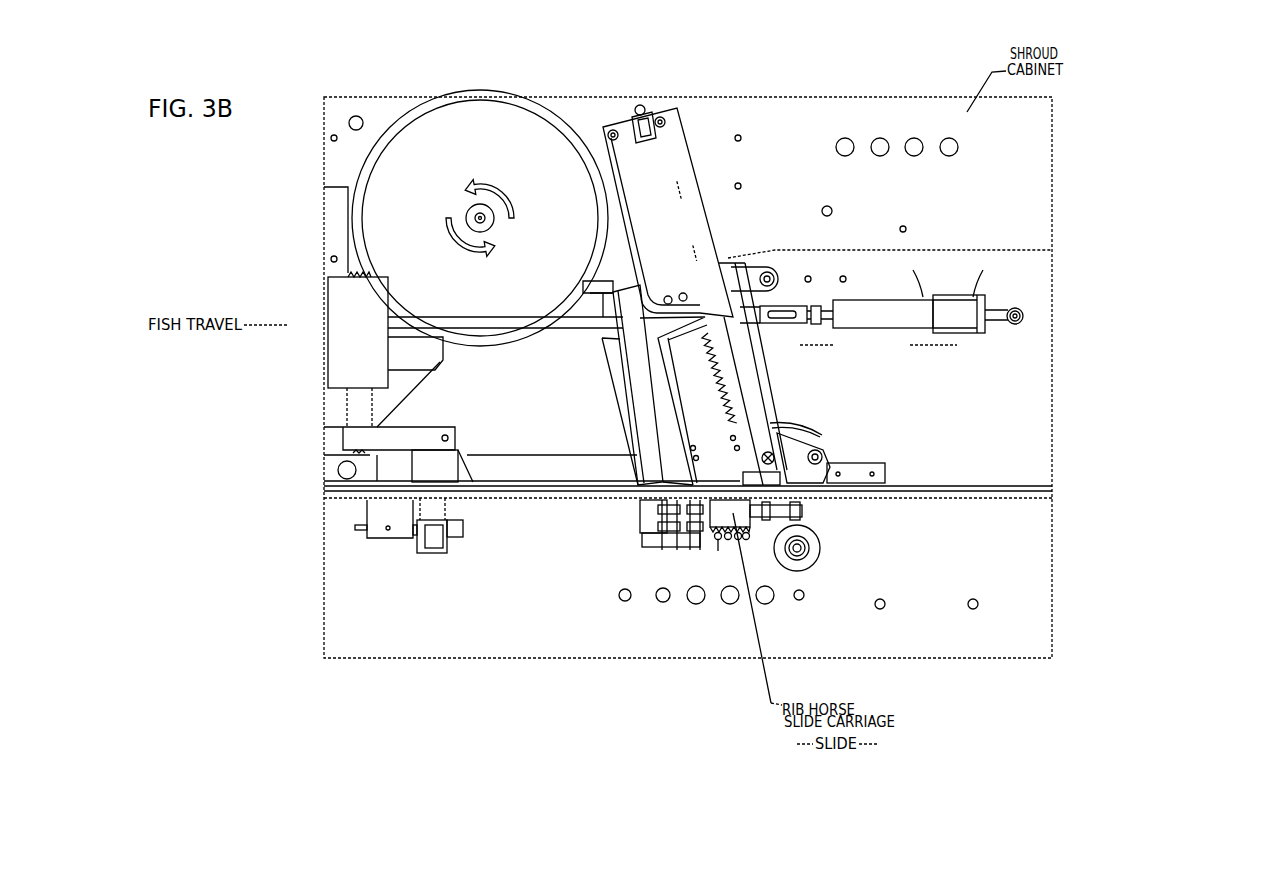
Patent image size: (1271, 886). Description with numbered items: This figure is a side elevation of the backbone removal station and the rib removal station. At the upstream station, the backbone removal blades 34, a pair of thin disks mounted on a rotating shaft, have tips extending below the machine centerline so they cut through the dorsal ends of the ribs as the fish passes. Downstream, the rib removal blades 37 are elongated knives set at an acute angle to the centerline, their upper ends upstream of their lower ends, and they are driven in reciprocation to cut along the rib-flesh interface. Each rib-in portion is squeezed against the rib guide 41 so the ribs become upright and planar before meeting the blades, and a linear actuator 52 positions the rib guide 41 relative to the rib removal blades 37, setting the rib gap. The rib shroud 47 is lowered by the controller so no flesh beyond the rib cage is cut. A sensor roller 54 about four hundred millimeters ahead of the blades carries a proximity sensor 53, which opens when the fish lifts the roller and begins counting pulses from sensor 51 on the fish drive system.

The backbone removal blades 34 is at (468, 88).
The rib removal blades 37 is at (753, 405).
The rib guide 41 is at (657, 385).
The rib shroud 47 is at (668, 150).
The sensor 51 is at (667, 548).
The linear actuator 52 is at (957, 310).
The proximity sensor 53 is at (378, 528).
The sensor roller 54 is at (355, 359).